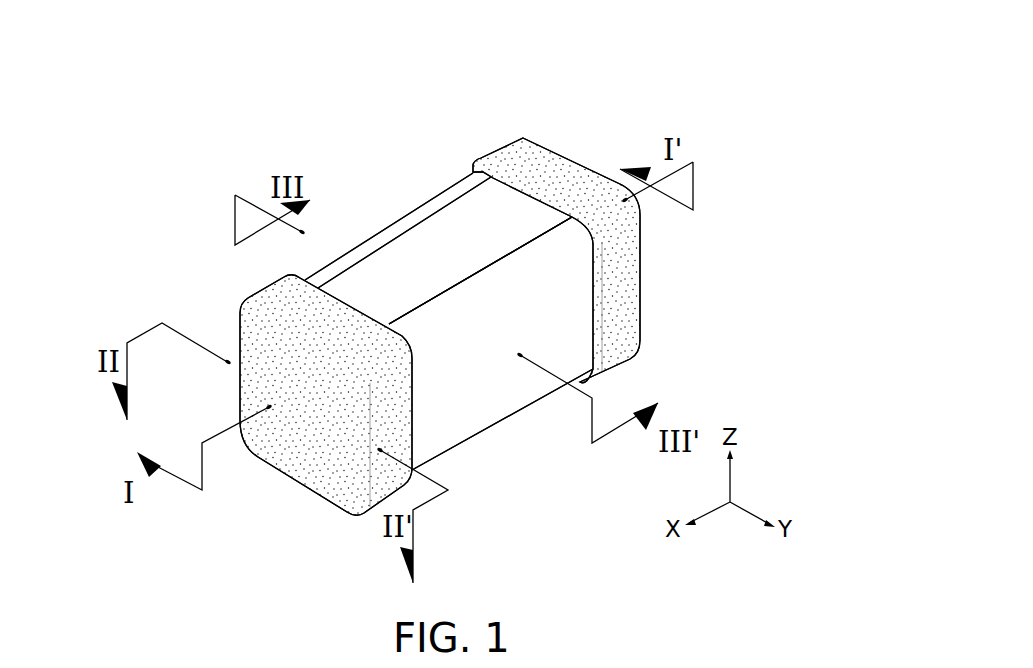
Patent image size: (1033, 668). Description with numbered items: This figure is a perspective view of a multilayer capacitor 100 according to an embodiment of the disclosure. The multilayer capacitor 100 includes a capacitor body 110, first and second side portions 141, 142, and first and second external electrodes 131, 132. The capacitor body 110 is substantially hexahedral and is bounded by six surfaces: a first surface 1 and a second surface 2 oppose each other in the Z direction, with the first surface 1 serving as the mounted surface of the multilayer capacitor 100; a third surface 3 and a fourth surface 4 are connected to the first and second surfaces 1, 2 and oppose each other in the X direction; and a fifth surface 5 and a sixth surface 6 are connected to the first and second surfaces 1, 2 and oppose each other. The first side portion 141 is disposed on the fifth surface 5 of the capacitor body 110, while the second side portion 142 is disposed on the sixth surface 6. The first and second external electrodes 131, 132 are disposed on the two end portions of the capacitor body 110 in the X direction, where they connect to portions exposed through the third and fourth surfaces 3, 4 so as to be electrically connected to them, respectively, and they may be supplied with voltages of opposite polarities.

The multilayer capacitor 100 is at (463, 42).
The capacitor body 110 is at (441, 250).
The first external electrode 131 is at (326, 472).
The second external electrode 132 is at (620, 322).
The first side portion 141 is at (440, 240).
The second side portion 142 is at (550, 252).
The first surface 1 is at (442, 396).
The second surface 2 is at (391, 251).
The third surface 3 is at (309, 449).
The fourth surface 4 is at (572, 136).
The fifth surface 5 is at (499, 401).
The sixth surface 6 is at (420, 236).